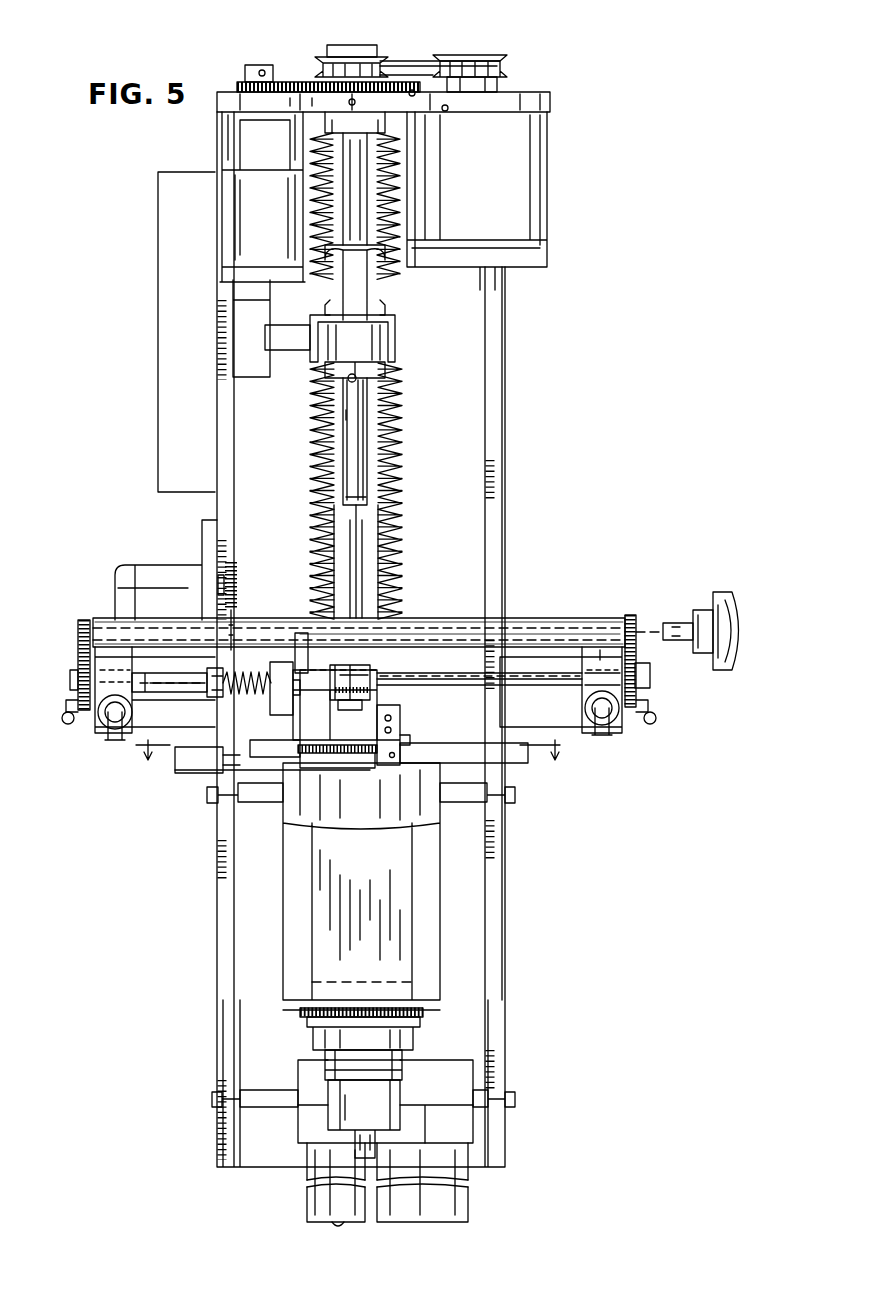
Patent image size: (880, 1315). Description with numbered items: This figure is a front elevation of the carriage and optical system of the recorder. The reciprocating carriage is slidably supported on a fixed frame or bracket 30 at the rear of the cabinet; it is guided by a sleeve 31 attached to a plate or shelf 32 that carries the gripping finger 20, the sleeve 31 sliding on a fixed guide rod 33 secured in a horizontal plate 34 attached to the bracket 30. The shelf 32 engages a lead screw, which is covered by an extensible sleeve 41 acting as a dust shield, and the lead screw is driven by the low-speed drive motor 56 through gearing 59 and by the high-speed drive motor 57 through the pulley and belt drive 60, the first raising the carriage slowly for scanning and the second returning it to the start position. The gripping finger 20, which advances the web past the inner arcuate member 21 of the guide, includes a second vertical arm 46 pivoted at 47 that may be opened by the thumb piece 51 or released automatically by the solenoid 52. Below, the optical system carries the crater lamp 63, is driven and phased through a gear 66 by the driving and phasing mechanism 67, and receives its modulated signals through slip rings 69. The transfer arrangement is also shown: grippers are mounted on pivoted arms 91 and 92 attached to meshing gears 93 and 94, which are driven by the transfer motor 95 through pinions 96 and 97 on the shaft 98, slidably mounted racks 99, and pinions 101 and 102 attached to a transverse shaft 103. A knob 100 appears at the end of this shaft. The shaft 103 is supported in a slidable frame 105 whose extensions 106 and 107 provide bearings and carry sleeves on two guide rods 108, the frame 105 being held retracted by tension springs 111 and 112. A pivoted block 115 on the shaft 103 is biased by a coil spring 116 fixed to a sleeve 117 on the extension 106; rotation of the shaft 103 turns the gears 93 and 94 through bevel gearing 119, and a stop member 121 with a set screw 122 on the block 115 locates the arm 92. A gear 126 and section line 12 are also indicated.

The section line 12 is at (352, 751).
The gripping finger 20 is at (340, 511).
The inner arcuate member 21 is at (250, 748).
The fixed frame or bracket 30 is at (496, 387).
The sleeve 31 is at (330, 367).
The plate or shelf 32 is at (395, 337).
The guide rod 33 is at (358, 180).
The horizontal plate 34 is at (516, 95).
The extensible sleeve 41 is at (395, 462).
The pivoted vertical arm 46 is at (368, 450).
The pivot 47 is at (315, 447).
The thumb piece 51 is at (411, 313).
The solenoid 52 is at (327, 292).
The low-speed drive motor 56 is at (258, 190).
The high-speed drive motor 57 is at (535, 158).
The gearing 59 is at (306, 82).
The pulley and belt drive 60 is at (448, 62).
The crater lamp 63 is at (338, 1116).
The gear 66 is at (300, 1012).
The driving and phasing mechanism 67 is at (468, 1200).
The slip rings 69 is at (402, 1078).
The pivoted arm 91 is at (183, 772).
The pivoted arm 92 is at (518, 764).
The meshing gear 93 is at (306, 756).
The meshing gear 94 is at (376, 762).
The transfer motor 95 is at (153, 565).
The pinion 96 is at (80, 630).
The pinion 97 is at (634, 616).
The shaft 98 is at (543, 626).
The racks 99 is at (648, 708).
The knob 100 is at (722, 596).
The pinion 101 is at (78, 680).
The pinion 102 is at (652, 676).
The transverse shaft 103 is at (448, 694).
The slidable frame 105 is at (428, 615).
The extension 106 is at (128, 695).
The extension 107 is at (582, 690).
The guide rods 108 is at (108, 742).
The tension spring 111 is at (62, 720).
The tension spring 112 is at (658, 720).
The pivoted block 115 is at (300, 724).
The coil spring 116 is at (244, 690).
The sleeve 117 is at (183, 670).
The bevel gearing 119 is at (348, 665).
The stop member 121 is at (400, 740).
The set screw 122 is at (400, 751).
The gear 126 is at (296, 640).